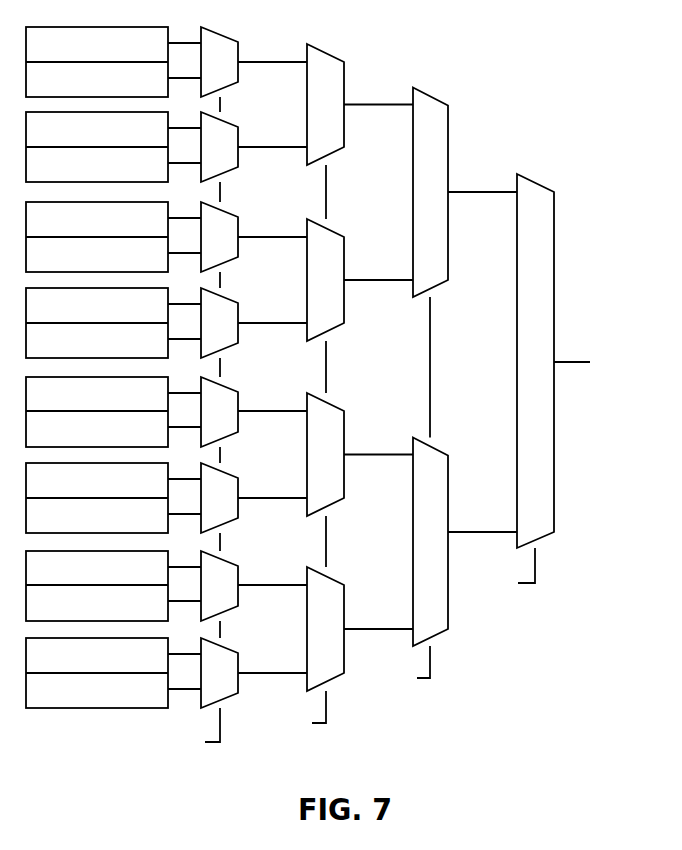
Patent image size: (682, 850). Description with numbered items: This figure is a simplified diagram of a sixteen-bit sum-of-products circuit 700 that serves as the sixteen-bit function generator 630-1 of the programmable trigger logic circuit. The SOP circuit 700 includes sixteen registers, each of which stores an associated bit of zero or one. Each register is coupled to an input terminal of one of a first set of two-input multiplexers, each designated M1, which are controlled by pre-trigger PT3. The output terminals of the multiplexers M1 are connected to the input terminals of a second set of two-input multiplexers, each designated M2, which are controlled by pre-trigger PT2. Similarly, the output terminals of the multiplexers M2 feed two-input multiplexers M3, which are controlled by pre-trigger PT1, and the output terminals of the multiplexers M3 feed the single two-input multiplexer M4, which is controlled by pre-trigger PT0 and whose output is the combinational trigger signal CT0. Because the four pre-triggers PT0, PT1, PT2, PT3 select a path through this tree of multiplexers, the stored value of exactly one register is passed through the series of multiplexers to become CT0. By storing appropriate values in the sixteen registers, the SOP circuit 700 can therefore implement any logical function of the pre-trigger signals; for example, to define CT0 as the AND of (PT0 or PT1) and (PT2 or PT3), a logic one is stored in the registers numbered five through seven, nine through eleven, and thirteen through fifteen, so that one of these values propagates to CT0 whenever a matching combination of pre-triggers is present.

The sum-of-products circuit 700 is at (335, 389).
The 16-bit function generator 630-1 is at (335, 389).
The first set of two-input MUXs M1 is at (237, 367).
The second set of two-input MUXs M2 is at (360, 367).
The two-input MUXs M3 is at (465, 367).
The two-input MUX M4 is at (535, 361).
The pre-trigger signal PT0 is at (190, 731).
The pre-trigger signal PT1 is at (297, 713).
The pre-trigger signal PT2 is at (402, 669).
The pre-trigger signal PT3 is at (504, 572).
The combinational trigger signal CT0 is at (596, 362).